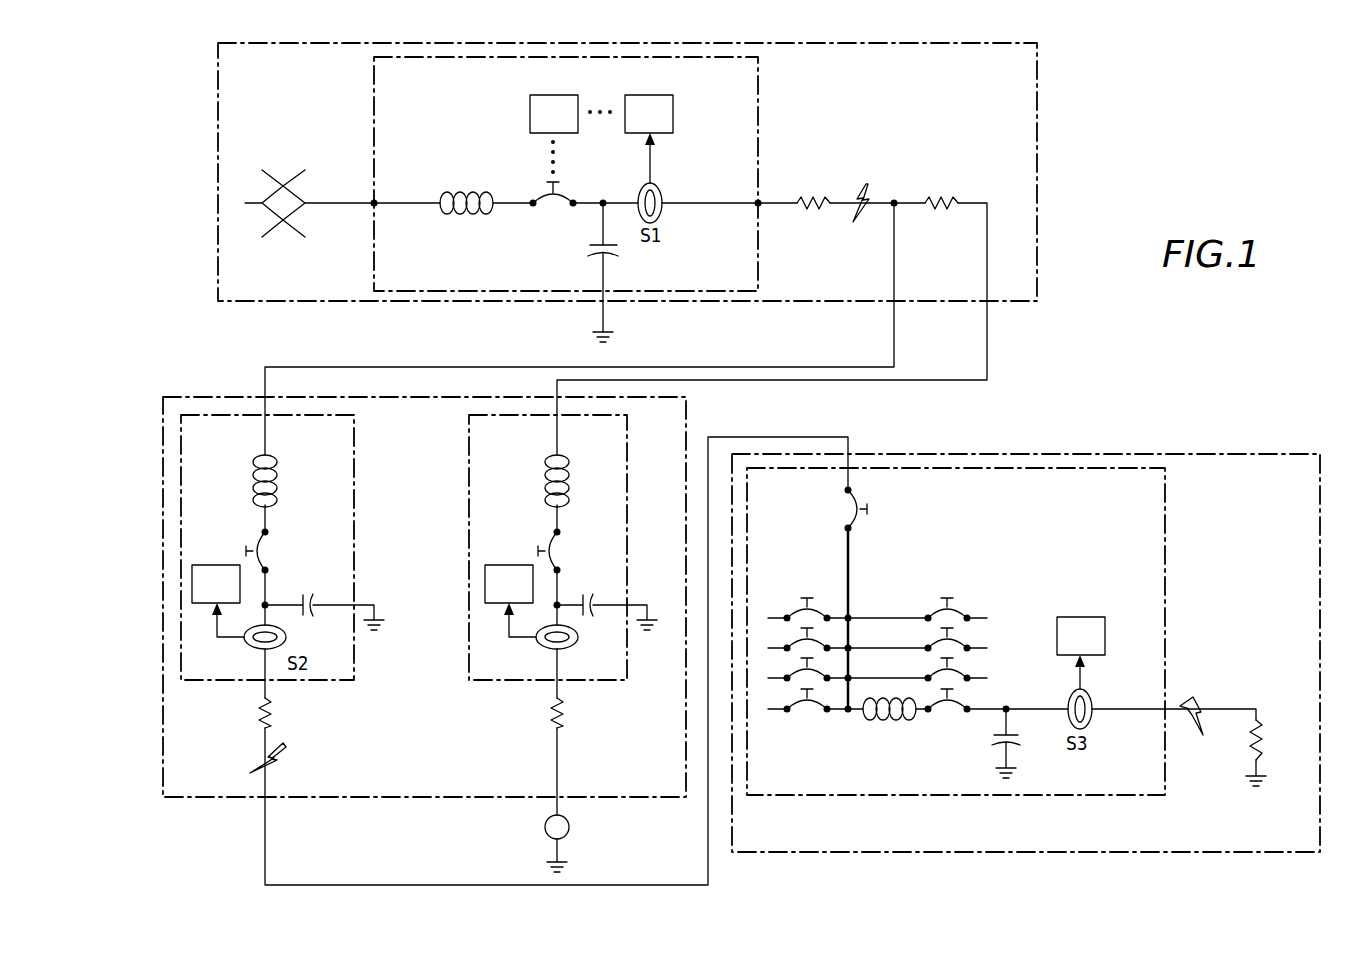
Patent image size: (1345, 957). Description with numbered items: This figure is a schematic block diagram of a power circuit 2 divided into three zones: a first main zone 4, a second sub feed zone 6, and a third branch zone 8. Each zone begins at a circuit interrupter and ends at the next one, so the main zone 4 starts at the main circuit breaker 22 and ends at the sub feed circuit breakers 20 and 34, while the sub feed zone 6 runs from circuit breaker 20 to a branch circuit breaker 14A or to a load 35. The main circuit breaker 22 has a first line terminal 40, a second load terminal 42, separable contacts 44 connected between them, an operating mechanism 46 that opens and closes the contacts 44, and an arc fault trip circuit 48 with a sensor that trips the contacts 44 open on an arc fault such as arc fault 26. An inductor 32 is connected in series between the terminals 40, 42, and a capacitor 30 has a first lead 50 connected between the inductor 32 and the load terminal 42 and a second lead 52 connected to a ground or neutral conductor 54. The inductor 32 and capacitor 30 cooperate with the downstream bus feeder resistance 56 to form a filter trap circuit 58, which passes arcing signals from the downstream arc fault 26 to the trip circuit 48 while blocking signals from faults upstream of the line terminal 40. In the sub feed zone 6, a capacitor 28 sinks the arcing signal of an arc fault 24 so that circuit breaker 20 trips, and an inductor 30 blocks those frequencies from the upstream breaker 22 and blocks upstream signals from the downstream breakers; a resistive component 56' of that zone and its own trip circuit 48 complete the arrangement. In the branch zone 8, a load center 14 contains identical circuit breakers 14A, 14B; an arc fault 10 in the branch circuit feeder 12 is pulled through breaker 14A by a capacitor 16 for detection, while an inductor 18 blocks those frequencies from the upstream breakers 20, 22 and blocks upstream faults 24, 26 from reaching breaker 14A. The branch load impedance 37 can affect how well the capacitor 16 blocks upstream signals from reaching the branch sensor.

The power circuit 2 is at (1066, 404).
The first (main) zone 4 is at (1037, 112).
The second (sub feed) zone 6 is at (686, 407).
The third (branch) zone 8 is at (1258, 453).
The arc fault 10 is at (1186, 694).
The branch circuit feeder 12 is at (1222, 690).
The load center 14 is at (1165, 546).
The branch circuit breaker 14A is at (972, 696).
The circuit breaker 14B is at (972, 666).
The capacitor C3 16 is at (994, 740).
The inductor L3 18 is at (873, 726).
The circuit breaker 20 is at (354, 437).
The main circuit breaker 22 is at (374, 103).
The arc fault 24 is at (249, 757).
The arc fault 26 is at (862, 184).
The capacitor C2a 28 is at (312, 616).
The capacitor C1 30 is at (606, 257).
The inductor L1 32 is at (460, 192).
The circuit breaker 34 is at (469, 498).
The load 35 is at (545, 834).
The resistor R3 37 is at (1265, 741).
The first line terminal 40 is at (374, 201).
The second load terminal 42 is at (758, 206).
The separable contacts 44 is at (533, 200).
The operating mechanism 46 is at (530, 117).
The arc fault trip circuit 48 is at (675, 103).
The first lead 50 is at (603, 224).
The second lead 52 is at (604, 278).
The ground or neutral conductor 54 is at (603, 327).
The bus feeder resistance R1a 56 is at (818, 209).
The resistor R2a 56' is at (275, 713).
The filter trap circuit 58 is at (545, 252).